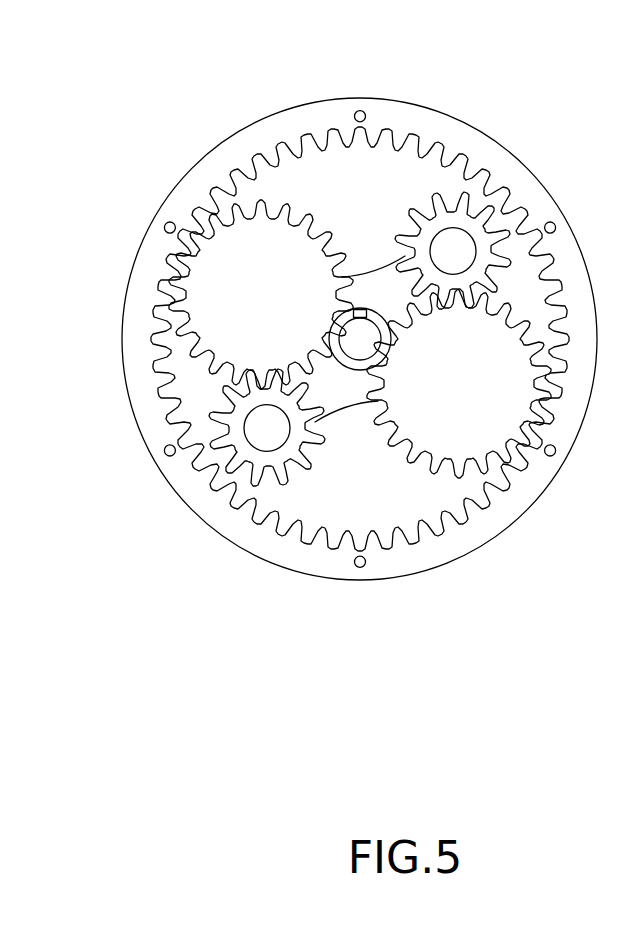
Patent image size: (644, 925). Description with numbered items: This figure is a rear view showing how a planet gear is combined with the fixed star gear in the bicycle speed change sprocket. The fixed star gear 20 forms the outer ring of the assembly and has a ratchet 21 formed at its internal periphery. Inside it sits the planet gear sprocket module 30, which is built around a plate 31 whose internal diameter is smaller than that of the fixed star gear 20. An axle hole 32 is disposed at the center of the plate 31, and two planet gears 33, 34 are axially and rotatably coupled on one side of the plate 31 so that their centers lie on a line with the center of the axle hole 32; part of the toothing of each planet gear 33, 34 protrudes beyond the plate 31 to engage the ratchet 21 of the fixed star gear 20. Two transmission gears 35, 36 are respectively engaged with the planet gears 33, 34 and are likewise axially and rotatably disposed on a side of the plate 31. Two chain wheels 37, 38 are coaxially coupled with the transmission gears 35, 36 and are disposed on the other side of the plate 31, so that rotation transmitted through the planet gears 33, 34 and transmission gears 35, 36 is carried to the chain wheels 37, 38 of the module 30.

The fixed star gear 20 is at (445, 125).
The ratchet 21 is at (375, 143).
The planet gear sprocket module 30 is at (299, 198).
The plate 31 is at (369, 286).
The axle hole 32 is at (355, 352).
The planet gear 33 is at (207, 268).
The planet gear 34 is at (510, 425).
The transmission gear 35 is at (264, 460).
The transmission gear 36 is at (477, 225).
The chain wheel 37 is at (487, 192).
The chain wheel 38 is at (213, 467).